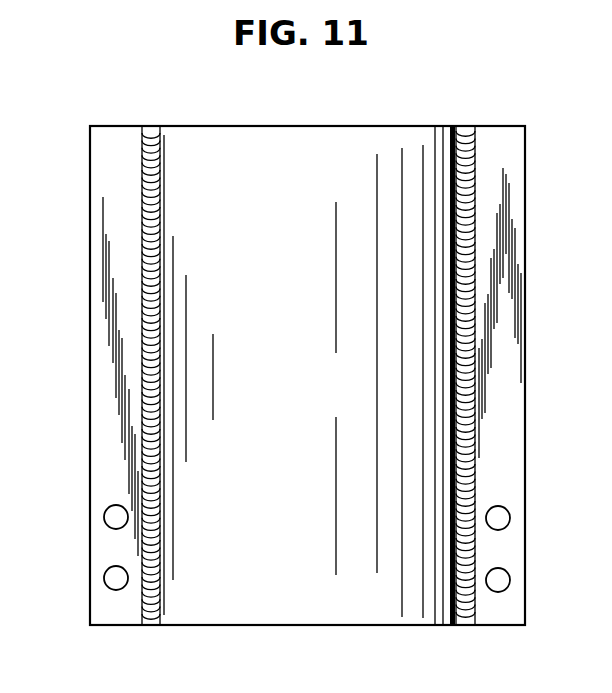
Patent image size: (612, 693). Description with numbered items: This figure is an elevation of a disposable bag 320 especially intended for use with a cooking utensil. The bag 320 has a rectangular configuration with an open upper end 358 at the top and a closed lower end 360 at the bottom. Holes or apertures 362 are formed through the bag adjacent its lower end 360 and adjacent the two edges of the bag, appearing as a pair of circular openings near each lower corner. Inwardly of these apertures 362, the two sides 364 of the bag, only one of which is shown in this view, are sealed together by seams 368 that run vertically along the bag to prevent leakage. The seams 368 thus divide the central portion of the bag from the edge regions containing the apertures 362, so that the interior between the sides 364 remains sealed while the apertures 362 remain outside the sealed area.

The bag 320 is at (89, 235).
The open upper end 358 is at (282, 126).
The closed lower end 360 is at (360, 627).
The holes or apertures 362 is at (106, 572).
The sides of the bag 364 is at (306, 281).
The seams 368 is at (152, 127).